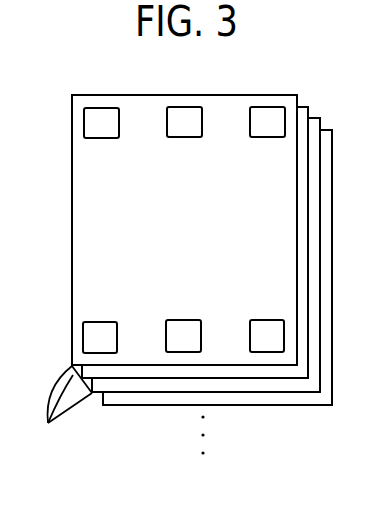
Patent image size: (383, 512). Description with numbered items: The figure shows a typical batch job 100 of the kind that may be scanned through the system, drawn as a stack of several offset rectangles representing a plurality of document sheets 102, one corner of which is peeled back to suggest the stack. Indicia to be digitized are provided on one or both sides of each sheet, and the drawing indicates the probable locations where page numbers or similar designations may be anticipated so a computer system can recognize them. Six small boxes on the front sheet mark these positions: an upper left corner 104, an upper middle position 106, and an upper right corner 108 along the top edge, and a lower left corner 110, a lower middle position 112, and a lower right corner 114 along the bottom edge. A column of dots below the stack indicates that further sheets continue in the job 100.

The job 100 is at (106, 79).
The document sheets 102 is at (59, 412).
The upper left corner 104 is at (84, 123).
The upper middle position 106 is at (181, 107).
The upper right corner 108 is at (268, 107).
The lower left corner 110 is at (83, 338).
The lower middle position 112 is at (187, 320).
The lower right corner 114 is at (267, 320).